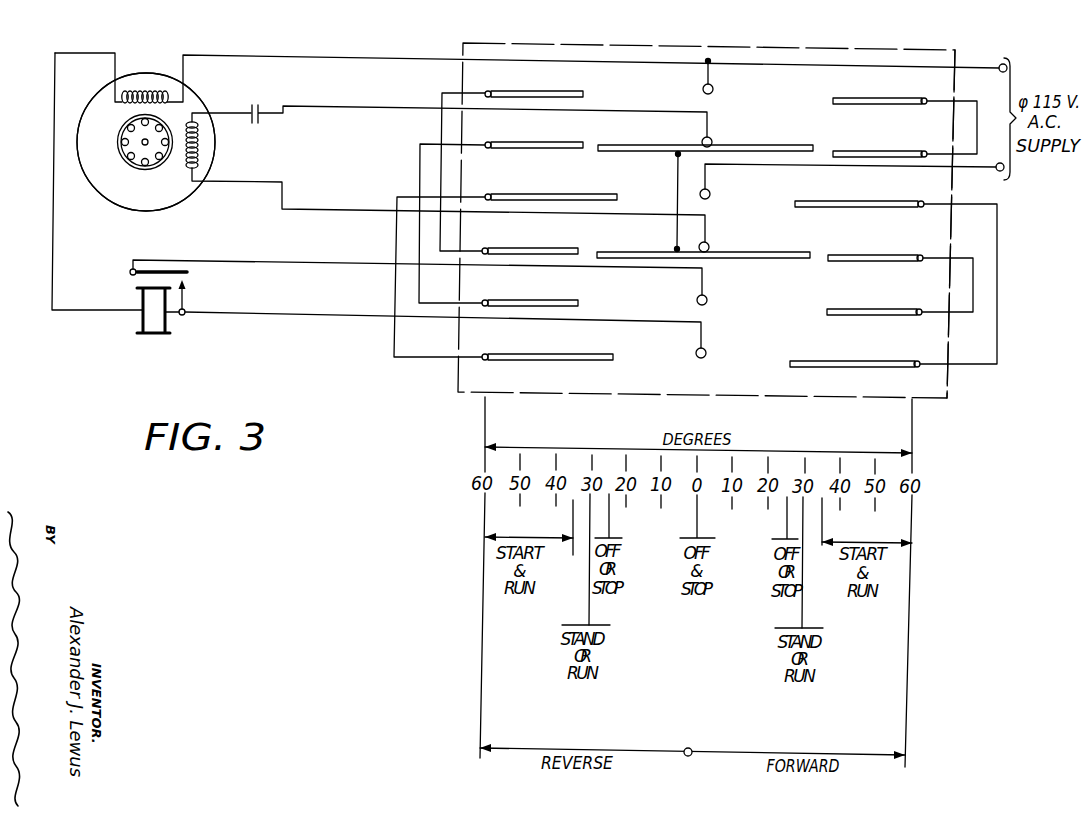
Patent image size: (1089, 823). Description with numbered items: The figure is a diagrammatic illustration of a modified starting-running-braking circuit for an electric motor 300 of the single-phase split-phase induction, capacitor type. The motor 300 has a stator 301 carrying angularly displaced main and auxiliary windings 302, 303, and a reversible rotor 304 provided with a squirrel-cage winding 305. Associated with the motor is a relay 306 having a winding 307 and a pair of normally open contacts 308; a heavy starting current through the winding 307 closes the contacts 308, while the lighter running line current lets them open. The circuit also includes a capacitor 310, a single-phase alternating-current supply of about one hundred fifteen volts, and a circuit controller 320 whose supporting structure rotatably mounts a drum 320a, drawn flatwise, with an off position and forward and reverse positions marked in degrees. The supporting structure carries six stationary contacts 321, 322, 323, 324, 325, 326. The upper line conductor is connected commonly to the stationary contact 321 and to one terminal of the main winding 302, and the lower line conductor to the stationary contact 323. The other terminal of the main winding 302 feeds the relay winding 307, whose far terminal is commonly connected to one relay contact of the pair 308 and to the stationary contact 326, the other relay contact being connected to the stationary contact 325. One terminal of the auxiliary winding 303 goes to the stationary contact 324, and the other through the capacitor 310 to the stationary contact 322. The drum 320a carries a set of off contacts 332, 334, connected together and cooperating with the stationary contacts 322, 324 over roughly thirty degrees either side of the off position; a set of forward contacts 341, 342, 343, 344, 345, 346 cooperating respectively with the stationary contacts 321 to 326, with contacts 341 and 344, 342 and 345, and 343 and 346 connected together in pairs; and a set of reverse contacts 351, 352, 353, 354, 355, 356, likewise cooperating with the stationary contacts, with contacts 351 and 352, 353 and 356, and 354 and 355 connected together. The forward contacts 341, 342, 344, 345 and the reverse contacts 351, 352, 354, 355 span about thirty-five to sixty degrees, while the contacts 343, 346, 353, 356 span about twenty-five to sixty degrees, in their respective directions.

The electric motor 300 is at (128, 55).
The stator 301 is at (172, 196).
The main winding 302 is at (132, 93).
The auxiliary winding 303 is at (198, 146).
The reversible rotor 304 is at (133, 163).
The squirrel-cage winding 305 is at (119, 130).
The relay 306 is at (122, 247).
The relay winding 307 is at (143, 294).
The relay contacts 308 is at (188, 281).
The capacitor 310 is at (262, 100).
The circuit controller 320 is at (523, 50).
The rotatable drum 320a is at (835, 52).
The stationary contact 321 is at (712, 86).
The stationary contact 322 is at (711, 139).
The stationary contact 323 is at (709, 191).
The stationary contact 324 is at (709, 244).
The stationary contact 325 is at (706, 297).
The stationary contact 326 is at (705, 350).
The off contact 332 is at (620, 146).
The off contact 334 is at (615, 251).
The forward contact 341 is at (500, 93).
The forward contact 342 is at (500, 145).
The forward contact 343 is at (500, 197).
The forward contact 344 is at (497, 251).
The forward contact 345 is at (497, 303).
The forward contact 346 is at (497, 357).
The reverse contact 351 is at (862, 101).
The reverse contact 352 is at (860, 154).
The reverse contact 353 is at (855, 204).
The reverse contact 354 is at (855, 258).
The reverse contact 355 is at (848, 312).
The reverse contact 356 is at (850, 364).